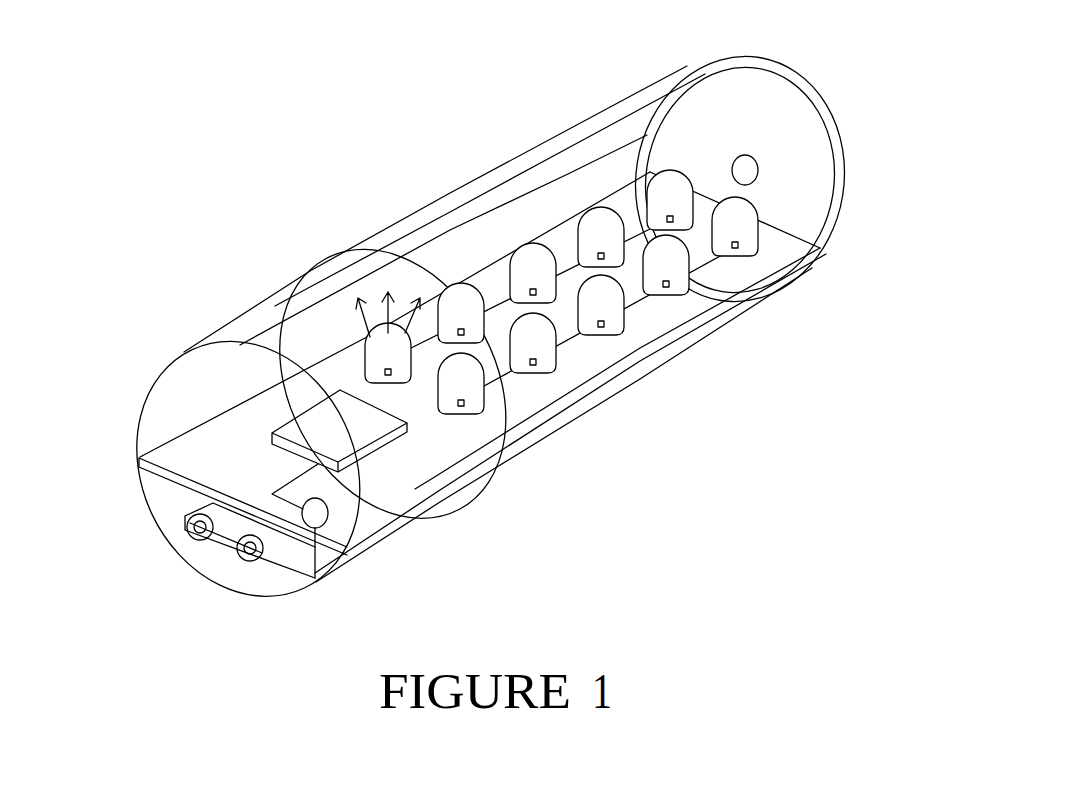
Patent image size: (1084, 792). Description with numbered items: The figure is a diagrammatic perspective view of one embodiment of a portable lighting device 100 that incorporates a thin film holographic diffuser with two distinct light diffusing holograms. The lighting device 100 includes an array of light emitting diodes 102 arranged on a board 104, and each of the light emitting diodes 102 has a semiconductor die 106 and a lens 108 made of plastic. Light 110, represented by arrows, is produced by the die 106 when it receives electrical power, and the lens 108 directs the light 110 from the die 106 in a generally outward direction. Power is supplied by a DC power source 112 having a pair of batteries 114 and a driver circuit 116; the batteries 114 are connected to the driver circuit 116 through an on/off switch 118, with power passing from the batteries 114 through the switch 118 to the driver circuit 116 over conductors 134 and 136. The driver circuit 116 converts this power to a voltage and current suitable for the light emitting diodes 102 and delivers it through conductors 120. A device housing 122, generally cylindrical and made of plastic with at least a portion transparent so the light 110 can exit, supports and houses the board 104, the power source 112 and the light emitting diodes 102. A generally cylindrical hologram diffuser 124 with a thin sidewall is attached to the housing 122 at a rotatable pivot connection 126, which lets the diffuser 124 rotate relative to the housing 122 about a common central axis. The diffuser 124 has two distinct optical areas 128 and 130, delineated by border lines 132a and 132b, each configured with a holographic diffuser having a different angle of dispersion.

The portable lighting device 100 is at (522, 331).
The light emitting diodes 102 is at (492, 421).
The board 104 is at (433, 479).
The semiconductor die 106 is at (668, 284).
The lens 108 is at (550, 358).
The light 110 is at (390, 305).
The DC power source 112 is at (216, 428).
The batteries 114 is at (197, 540).
The driver circuit 116 is at (284, 446).
The on/off switch 118 is at (330, 518).
The conductors 120 is at (362, 390).
The device housing 122 is at (186, 348).
The hologram diffuser 124 is at (603, 112).
The rotatable pivot connection 126 is at (753, 159).
The optical area 128 is at (537, 176).
The optical area 130 is at (705, 331).
The border line 132a is at (622, 142).
The border line 132b is at (818, 227).
The conductor 134 is at (318, 563).
The conductor 136 is at (300, 481).